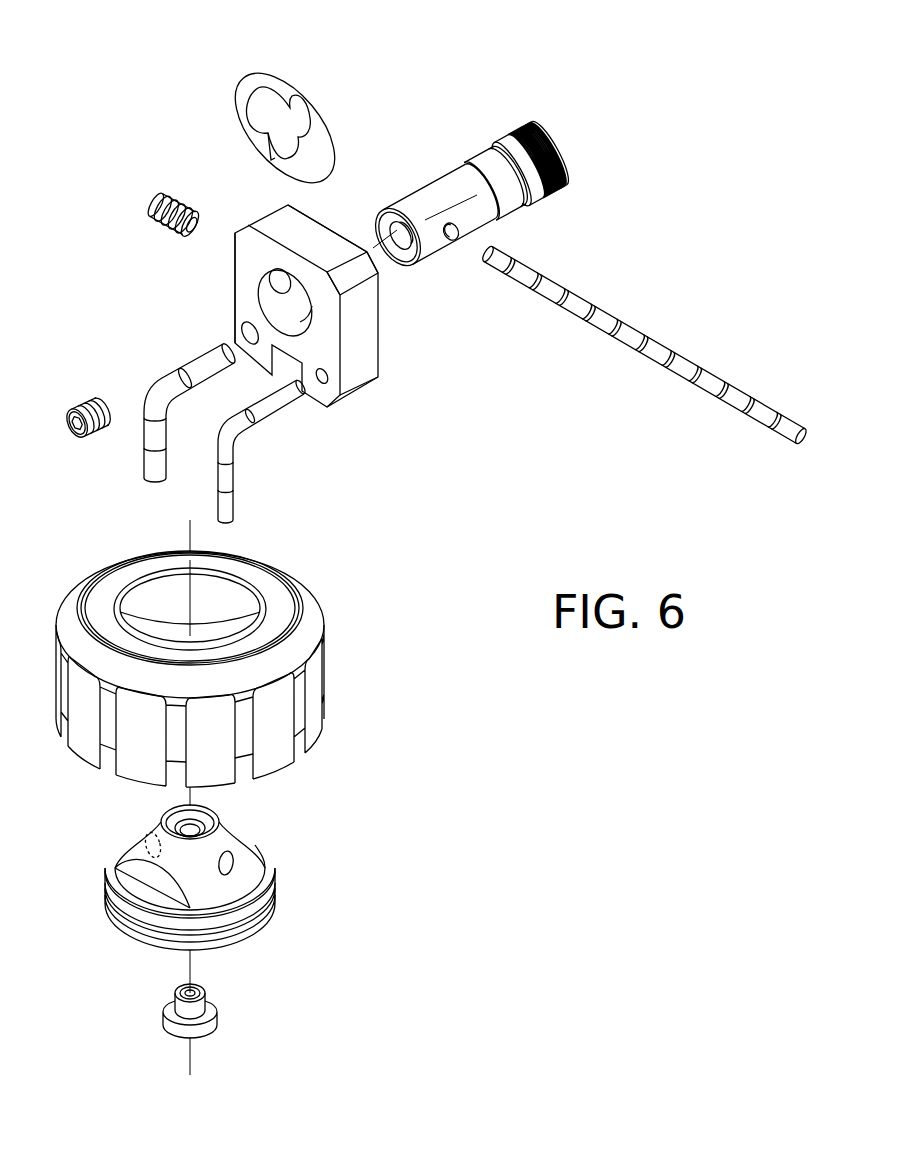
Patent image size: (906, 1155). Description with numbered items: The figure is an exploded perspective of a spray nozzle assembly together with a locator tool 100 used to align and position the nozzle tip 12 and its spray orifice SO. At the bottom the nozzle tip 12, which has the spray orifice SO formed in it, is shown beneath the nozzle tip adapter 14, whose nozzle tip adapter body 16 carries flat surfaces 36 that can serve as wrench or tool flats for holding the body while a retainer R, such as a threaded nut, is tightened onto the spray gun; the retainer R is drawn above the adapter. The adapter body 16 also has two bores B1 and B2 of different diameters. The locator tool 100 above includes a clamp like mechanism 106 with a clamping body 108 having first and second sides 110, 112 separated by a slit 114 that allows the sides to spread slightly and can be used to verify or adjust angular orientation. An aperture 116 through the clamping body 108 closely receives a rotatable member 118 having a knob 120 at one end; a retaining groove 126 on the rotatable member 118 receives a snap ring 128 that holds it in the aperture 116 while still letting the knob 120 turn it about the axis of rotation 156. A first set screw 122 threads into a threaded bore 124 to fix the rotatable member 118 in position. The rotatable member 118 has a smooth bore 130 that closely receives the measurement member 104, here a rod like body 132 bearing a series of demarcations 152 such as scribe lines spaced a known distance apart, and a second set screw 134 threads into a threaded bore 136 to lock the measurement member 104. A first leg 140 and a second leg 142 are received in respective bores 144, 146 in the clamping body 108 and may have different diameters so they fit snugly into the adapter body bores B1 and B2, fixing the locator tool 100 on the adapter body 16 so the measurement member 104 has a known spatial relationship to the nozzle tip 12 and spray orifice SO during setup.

The locator tool 100 is at (808, 62).
The measurement member 104 is at (683, 390).
The clamp like mechanism 106 is at (388, 394).
The clamping body 108 is at (282, 212).
The first side 110 is at (367, 353).
The second side 112 is at (258, 298).
The slit 114 is at (342, 233).
The aperture 116 is at (318, 311).
The rotatable member 118 is at (443, 180).
The knob 120 is at (532, 130).
The first set screw 122 is at (153, 200).
The threaded bore 124 is at (262, 275).
The retaining groove 126 is at (518, 213).
The snap ring 128 is at (237, 108).
The smooth bore 130 is at (455, 241).
The rod like body 132 is at (775, 432).
The second set screw 134 is at (80, 400).
The threaded bore 136 is at (381, 212).
The first leg 140 is at (190, 360).
The second leg 142 is at (243, 432).
The bore 144 is at (250, 333).
The bore 146 is at (322, 385).
The demarcations 152 is at (567, 292).
The axis of rotation 156 is at (557, 143).
The retainer R is at (338, 645).
The nozzle tip adapter 14 is at (310, 905).
The nozzle tip adapter body 16 is at (225, 832).
The flat surface 36 is at (258, 848).
The bore B1 is at (153, 838).
The bore B2 is at (233, 866).
The spray orifice SO is at (200, 992).
The nozzle tip 12 is at (220, 1017).